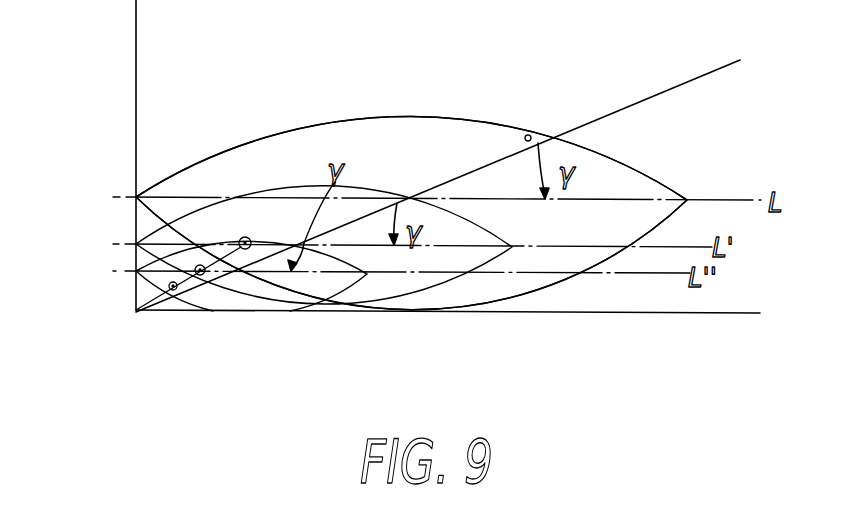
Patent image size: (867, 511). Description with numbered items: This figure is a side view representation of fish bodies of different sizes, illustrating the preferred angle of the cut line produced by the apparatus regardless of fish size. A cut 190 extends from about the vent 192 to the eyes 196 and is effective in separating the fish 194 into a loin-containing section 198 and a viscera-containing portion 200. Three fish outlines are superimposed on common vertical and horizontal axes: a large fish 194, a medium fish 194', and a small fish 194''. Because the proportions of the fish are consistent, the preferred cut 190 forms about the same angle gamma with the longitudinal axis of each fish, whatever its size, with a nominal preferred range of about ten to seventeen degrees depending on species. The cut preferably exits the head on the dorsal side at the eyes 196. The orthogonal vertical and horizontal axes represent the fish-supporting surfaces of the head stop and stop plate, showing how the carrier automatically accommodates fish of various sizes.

The cut 190 is at (662, 93).
The vent 192 is at (531, 133).
The large fish 194 is at (411, 162).
The medium fish 194' is at (324, 191).
The small fish 194'' is at (202, 263).
The eyes 196 is at (245, 250).
The loin-containing section 198 is at (502, 292).
The viscera-containing portion 200 is at (349, 122).